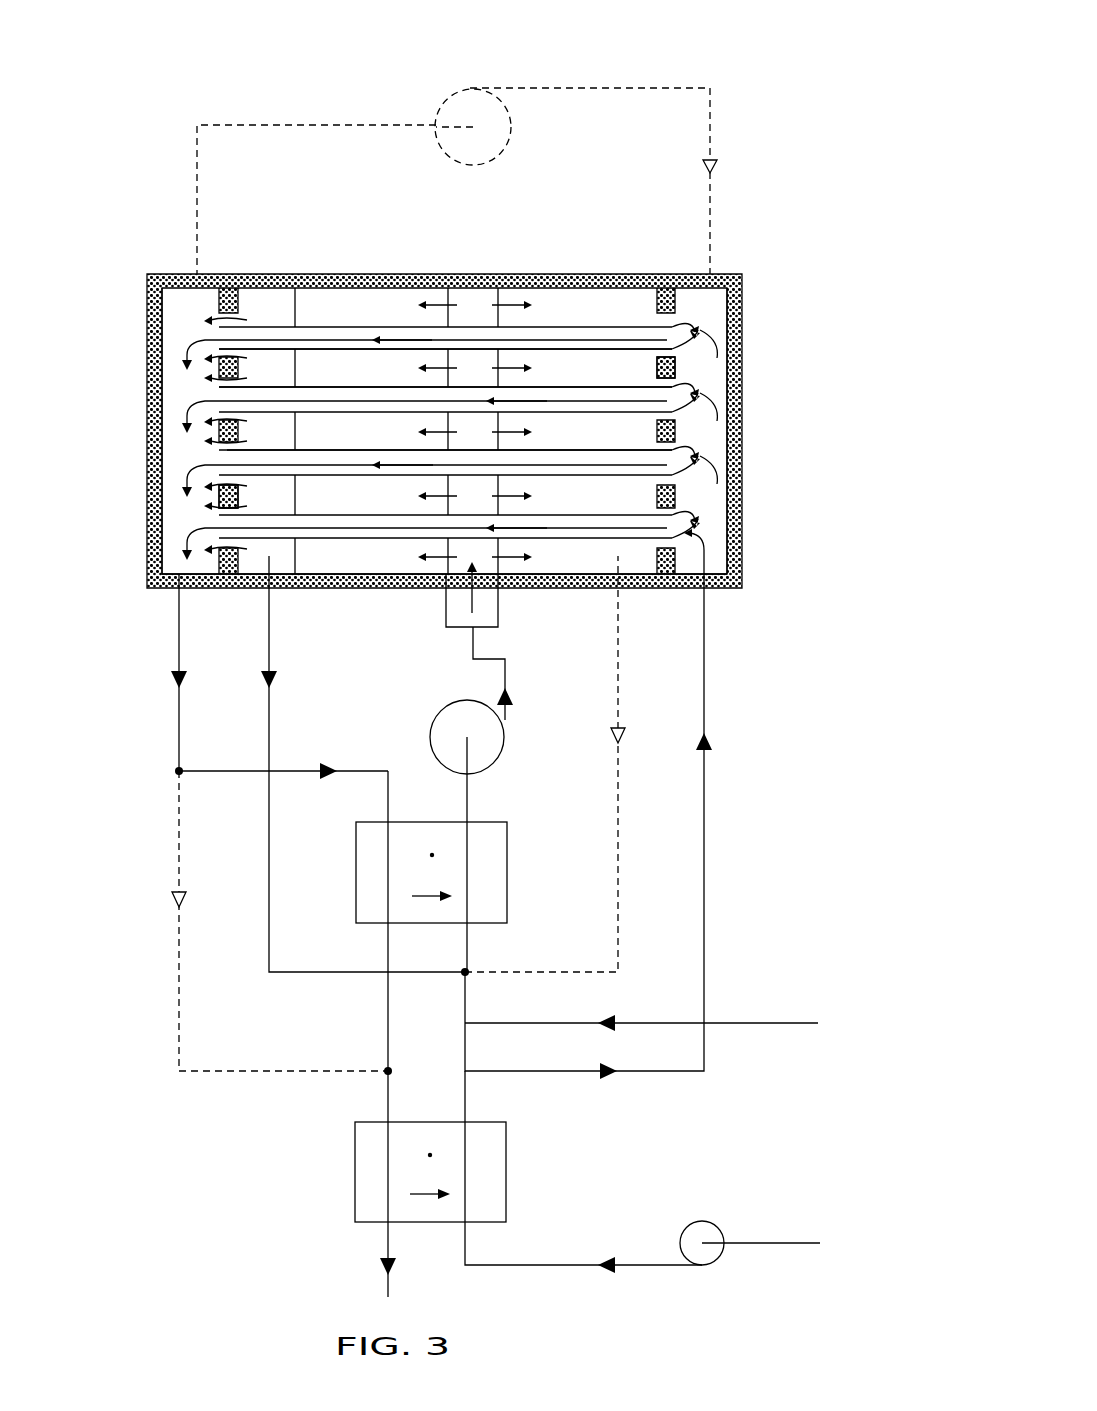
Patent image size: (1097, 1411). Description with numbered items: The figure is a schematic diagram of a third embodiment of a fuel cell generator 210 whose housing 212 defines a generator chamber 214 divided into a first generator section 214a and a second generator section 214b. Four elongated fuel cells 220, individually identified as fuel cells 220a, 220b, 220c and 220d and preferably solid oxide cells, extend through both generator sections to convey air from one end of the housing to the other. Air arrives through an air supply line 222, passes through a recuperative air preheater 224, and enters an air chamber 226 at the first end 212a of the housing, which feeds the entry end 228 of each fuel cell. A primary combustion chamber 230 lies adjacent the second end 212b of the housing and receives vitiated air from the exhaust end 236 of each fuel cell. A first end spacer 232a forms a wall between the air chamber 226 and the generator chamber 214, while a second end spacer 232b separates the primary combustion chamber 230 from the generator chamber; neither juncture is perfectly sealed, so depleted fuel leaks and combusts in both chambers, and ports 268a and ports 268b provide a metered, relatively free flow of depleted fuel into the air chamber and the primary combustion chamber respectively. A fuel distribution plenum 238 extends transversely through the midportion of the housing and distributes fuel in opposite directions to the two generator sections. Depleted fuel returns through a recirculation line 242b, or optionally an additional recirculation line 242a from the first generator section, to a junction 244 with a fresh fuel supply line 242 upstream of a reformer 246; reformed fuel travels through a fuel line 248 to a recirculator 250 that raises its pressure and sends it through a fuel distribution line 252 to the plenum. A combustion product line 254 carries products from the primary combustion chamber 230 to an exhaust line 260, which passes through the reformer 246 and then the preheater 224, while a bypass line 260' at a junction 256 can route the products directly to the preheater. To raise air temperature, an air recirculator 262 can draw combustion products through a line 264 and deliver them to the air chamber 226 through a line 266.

The fuel cell generator 210 is at (750, 268).
The housing 212 is at (144, 268).
The first end of the housing 212a is at (742, 296).
The second end of the housing 212b is at (147, 370).
The generator chamber 214 is at (272, 292).
The first generator section 214a is at (577, 300).
The second generator section 214b is at (330, 292).
The fuel cells 220 is at (337, 552).
The fuel cell 220a is at (375, 338).
The fuel cell 220b is at (560, 387).
The fuel cell 220c is at (565, 450).
The fuel cell 220d is at (615, 540).
The air supply line 222 is at (755, 1243).
The recuperative air preheater 224 is at (507, 1185).
The air chamber 226 is at (713, 450).
The entry end 228 is at (678, 366).
The primary combustion chamber 230 is at (168, 558).
The first end spacer 232a is at (667, 367).
The second end spacer 232b is at (232, 497).
The exhaust end 236 is at (227, 333).
The fuel distribution plenum 238 is at (470, 293).
The fresh fuel supply line 242 is at (660, 1023).
The additional recirculation line 242a is at (620, 706).
The recirculation line 242b is at (269, 660).
The junction 244 is at (467, 972).
The reformer 246 is at (507, 875).
The fuel line 248 is at (465, 798).
The recirculator 250 is at (500, 753).
The fuel distribution line 252 is at (507, 677).
The combustion product line 254 is at (179, 720).
The junction 256 is at (179, 771).
The exhaust line 260 is at (355, 1034).
The bypass line 260' is at (229, 921).
The air recirculator 262 is at (440, 113).
The line 264 is at (197, 152).
The line 266 is at (600, 88).
The ports 268a is at (665, 275).
The ports 268b is at (228, 275).